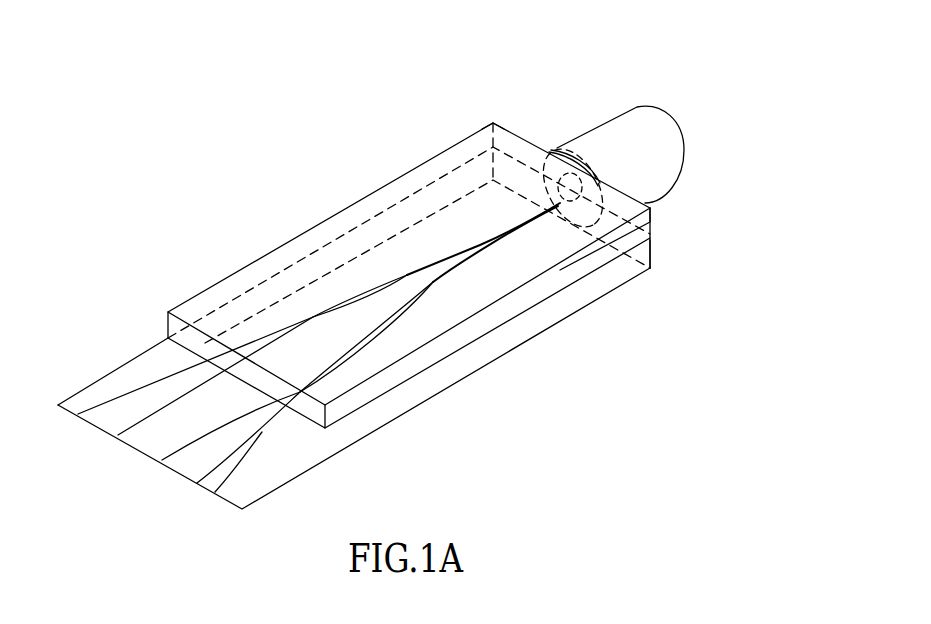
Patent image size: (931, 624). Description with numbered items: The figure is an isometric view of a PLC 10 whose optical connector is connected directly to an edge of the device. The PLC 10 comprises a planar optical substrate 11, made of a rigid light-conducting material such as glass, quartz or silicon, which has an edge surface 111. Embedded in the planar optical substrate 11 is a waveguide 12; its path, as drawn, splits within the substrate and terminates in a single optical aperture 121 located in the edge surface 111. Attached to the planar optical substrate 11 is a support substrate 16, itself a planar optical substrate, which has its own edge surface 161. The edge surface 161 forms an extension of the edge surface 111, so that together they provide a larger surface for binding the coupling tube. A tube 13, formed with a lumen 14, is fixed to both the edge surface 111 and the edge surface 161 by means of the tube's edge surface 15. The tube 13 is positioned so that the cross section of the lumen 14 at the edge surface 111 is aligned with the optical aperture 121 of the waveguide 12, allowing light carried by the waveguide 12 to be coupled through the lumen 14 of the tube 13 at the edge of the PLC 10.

The PLC 10 is at (622, 57).
The planar optical substrate 11 is at (120, 365).
The edge surface 111 is at (646, 252).
The waveguide 12 is at (512, 228).
The optical aperture 121 is at (570, 202).
The tube 13 is at (646, 161).
The lumen 14 is at (653, 212).
The tube's edge surface 15 is at (545, 150).
The support substrate 16 is at (282, 247).
The edge surface 161 is at (506, 138).